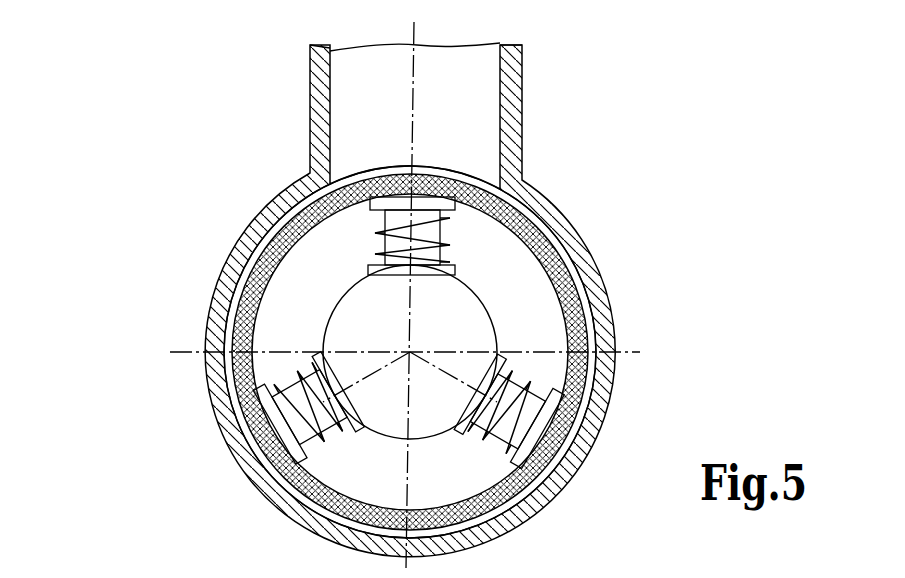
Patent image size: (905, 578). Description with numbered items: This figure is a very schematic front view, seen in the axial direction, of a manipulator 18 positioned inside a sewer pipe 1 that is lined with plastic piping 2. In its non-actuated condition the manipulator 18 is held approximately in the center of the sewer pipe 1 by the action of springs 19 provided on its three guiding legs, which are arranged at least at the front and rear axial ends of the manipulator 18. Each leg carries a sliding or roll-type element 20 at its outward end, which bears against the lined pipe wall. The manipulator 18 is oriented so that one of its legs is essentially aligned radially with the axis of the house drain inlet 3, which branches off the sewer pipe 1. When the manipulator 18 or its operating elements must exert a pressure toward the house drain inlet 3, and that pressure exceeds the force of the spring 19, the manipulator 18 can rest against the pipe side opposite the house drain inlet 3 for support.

The sewer pipe 1 is at (548, 205).
The plastic piping 2 is at (567, 288).
The house drain inlet 3 is at (370, 68).
The manipulator 18 is at (373, 323).
The spring 19 is at (537, 375).
The sliding or roll-type element 20 is at (263, 205).